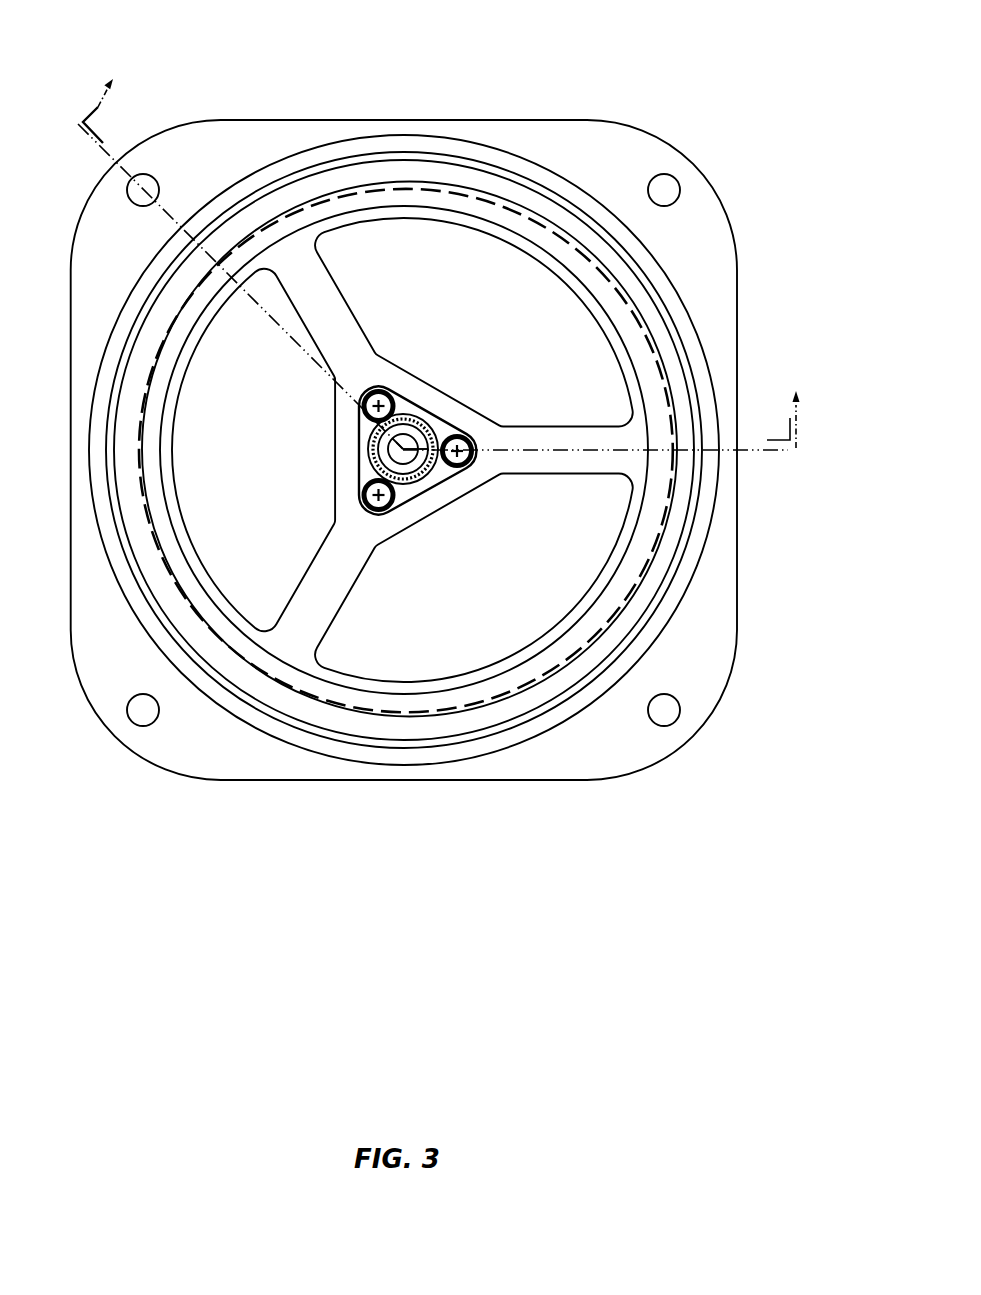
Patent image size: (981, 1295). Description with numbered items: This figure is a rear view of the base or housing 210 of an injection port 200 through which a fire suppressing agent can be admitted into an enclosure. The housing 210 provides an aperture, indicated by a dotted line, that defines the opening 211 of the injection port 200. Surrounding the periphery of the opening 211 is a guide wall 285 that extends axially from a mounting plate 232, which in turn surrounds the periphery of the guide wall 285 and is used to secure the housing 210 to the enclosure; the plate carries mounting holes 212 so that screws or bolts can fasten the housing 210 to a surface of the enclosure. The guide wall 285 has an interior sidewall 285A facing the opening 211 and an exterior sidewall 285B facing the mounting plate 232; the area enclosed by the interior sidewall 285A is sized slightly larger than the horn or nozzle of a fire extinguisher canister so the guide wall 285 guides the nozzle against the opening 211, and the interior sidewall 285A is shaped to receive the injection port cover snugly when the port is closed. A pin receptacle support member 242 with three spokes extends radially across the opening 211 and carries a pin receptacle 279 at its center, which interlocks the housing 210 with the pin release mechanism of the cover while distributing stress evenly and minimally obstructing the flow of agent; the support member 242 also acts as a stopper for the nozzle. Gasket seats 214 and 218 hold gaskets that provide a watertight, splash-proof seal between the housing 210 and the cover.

The injection port 200 is at (677, 87).
The housing 210 is at (678, 256).
The opening 211 is at (372, 188).
The mounting holes 212 is at (150, 178).
The gasket seat 214 is at (375, 757).
The gasket seat 218 is at (440, 730).
The mounting plate 232 is at (612, 747).
The pin receptacle support member 242 is at (342, 573).
The pin receptacle 279 is at (430, 474).
The guide wall 285 is at (677, 523).
The interior sidewall 285A is at (653, 557).
The exterior sidewall 285B is at (697, 480).